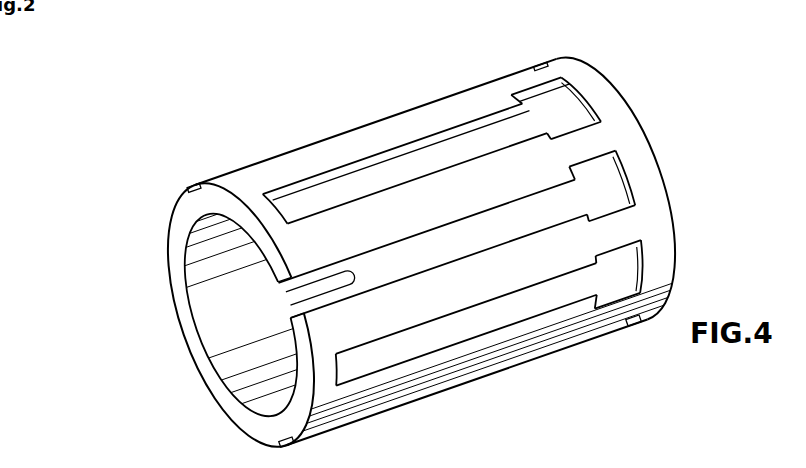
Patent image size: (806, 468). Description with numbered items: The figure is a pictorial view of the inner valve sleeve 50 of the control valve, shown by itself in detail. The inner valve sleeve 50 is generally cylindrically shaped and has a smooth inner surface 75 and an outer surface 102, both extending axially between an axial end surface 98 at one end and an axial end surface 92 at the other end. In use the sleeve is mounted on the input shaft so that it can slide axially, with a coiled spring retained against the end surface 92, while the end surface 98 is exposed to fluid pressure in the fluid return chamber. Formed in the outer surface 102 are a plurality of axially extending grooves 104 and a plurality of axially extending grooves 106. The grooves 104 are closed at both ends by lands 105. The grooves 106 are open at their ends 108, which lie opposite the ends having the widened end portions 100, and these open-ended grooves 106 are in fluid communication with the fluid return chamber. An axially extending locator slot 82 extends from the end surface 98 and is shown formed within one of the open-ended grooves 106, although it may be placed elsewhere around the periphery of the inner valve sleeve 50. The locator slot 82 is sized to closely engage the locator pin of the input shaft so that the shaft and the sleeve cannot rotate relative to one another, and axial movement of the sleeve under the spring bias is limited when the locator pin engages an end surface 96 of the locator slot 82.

The inner valve sleeve 50 is at (164, 134).
The smooth inner surface 75 is at (213, 262).
The locator slot 82 is at (325, 287).
The axial end surface 92 is at (625, 100).
The end surface of the locator slot 96 is at (357, 273).
The axial end surface 98 is at (182, 237).
The widened end portions 100 is at (565, 105).
The outer surface 102 is at (267, 180).
The axially extending grooves 104 is at (410, 167).
The lands 105 is at (265, 212).
The axially extending grooves 106 is at (518, 220).
The open ends 108 is at (307, 302).